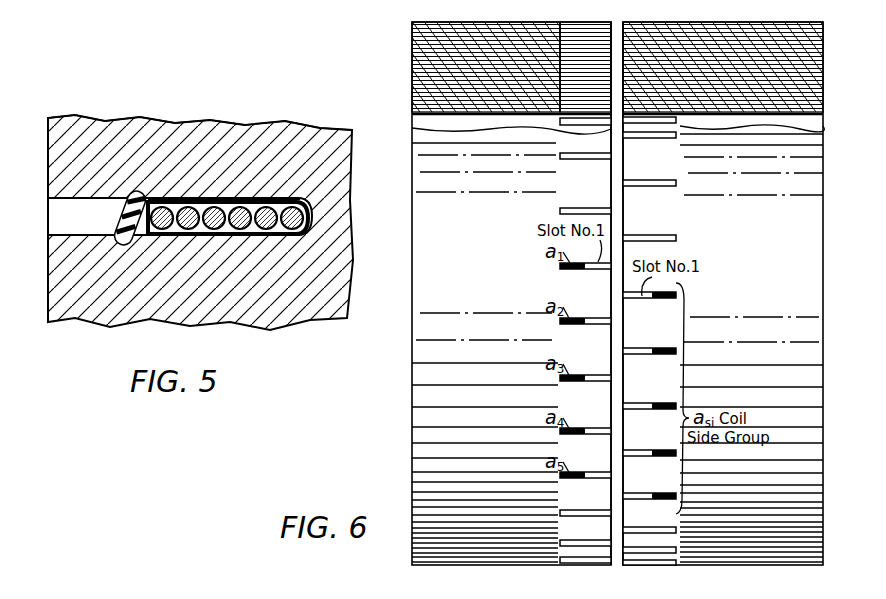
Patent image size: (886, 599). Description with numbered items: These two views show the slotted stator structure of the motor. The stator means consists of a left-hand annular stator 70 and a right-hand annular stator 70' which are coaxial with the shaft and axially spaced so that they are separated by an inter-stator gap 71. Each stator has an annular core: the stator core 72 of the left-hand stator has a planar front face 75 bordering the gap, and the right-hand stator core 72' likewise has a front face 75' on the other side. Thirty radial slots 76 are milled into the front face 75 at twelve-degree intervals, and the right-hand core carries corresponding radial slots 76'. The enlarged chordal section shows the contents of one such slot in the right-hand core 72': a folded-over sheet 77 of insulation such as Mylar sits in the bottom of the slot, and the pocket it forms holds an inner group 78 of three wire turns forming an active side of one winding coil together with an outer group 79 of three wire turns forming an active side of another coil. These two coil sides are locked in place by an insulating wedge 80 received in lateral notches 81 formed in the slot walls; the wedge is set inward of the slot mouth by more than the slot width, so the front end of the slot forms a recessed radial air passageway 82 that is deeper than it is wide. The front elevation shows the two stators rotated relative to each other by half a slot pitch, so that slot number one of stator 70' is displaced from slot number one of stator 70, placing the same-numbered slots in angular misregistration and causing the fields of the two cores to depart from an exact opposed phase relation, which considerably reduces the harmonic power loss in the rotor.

In FIG. 6, the left-hand annular stator 70 is at (492, 58).
In FIG. 6, the right-hand annular stator 70' is at (723, 57).
In FIG. 6, the inter-stator gap 71 is at (620, 282).
In FIG. 6, the stator core 72 is at (511, 293).
In FIG. 5, the right-hand stator core 72' is at (197, 237).
In FIG. 6, the right-hand stator core 72' is at (723, 293).
In FIG. 6, the front face 75 is at (588, 370).
In FIG. 5, the front face of right-hand core 75' is at (195, 115).
In FIG. 6, the front face of right-hand core 75' is at (649, 395).
In FIG. 6, the radial slots 76 is at (580, 340).
In FIG. 5, the radial slots of right-hand core 76' is at (54, 261).
In FIG. 6, the radial slots of right-hand core 76' is at (650, 341).
In FIG. 5, the folded-over sheet of insulation 77 is at (262, 238).
In FIG. 5, the inner group of wire turns 78 is at (300, 198).
In FIG. 5, the outer group of wire turns 79 is at (227, 198).
In FIG. 5, the insulating wedge 80 is at (112, 236).
In FIG. 5, the lateral notches 81 is at (129, 192).
In FIG. 5, the slot opening 82 is at (101, 231).